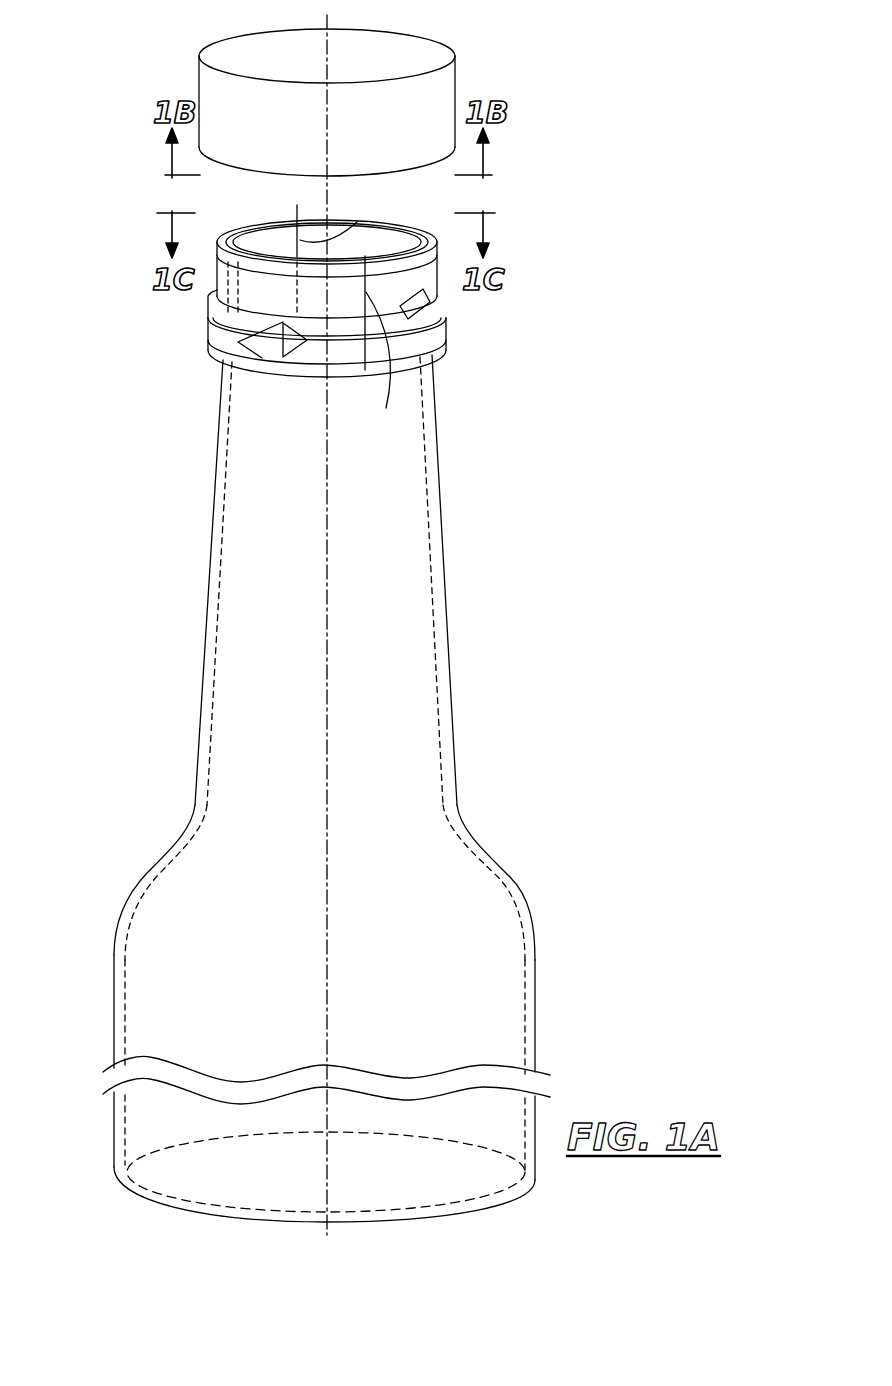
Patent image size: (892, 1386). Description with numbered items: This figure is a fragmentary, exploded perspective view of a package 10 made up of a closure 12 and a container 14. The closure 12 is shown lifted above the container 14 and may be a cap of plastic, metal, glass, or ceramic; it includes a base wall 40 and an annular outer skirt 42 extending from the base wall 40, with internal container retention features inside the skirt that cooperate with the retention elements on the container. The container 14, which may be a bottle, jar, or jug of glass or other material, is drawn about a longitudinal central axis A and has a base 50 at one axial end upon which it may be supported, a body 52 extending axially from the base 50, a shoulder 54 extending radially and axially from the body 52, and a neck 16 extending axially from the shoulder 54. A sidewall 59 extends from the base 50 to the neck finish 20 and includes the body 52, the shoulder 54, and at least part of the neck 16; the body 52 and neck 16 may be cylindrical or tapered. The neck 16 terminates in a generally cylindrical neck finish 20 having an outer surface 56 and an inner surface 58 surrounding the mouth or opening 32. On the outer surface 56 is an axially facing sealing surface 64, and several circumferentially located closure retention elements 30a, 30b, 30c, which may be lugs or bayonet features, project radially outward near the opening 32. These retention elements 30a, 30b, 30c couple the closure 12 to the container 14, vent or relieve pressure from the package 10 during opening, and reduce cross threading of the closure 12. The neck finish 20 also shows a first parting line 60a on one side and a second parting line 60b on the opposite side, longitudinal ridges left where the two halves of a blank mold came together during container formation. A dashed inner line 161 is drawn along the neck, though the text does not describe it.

The package 10 is at (156, 567).
The closure 12 is at (352, 97).
The container 14 is at (347, 580).
The neck 16 is at (222, 438).
The neck finish 20 is at (361, 311).
The closure retention element 30a is at (426, 325).
The closure retention element 30b is at (462, 309).
The closure retention element 30c is at (206, 256).
The mouth or opening 32 is at (386, 231).
The base wall 40 is at (382, 50).
The annular outer skirt 42 is at (198, 72).
The base 50 is at (501, 1205).
The body 52 is at (541, 1027).
The shoulder 54 is at (517, 873).
The outer surface 56 is at (430, 263).
The inner surface 58 is at (302, 251).
The sidewall 59 is at (145, 872).
The first parting line 60a is at (385, 345).
The second parting line 60b is at (335, 232).
The axially facing sealing surface 64 is at (228, 233).
The inner neck surface 161 is at (220, 618).
The longitudinal central axis A is at (328, 993).